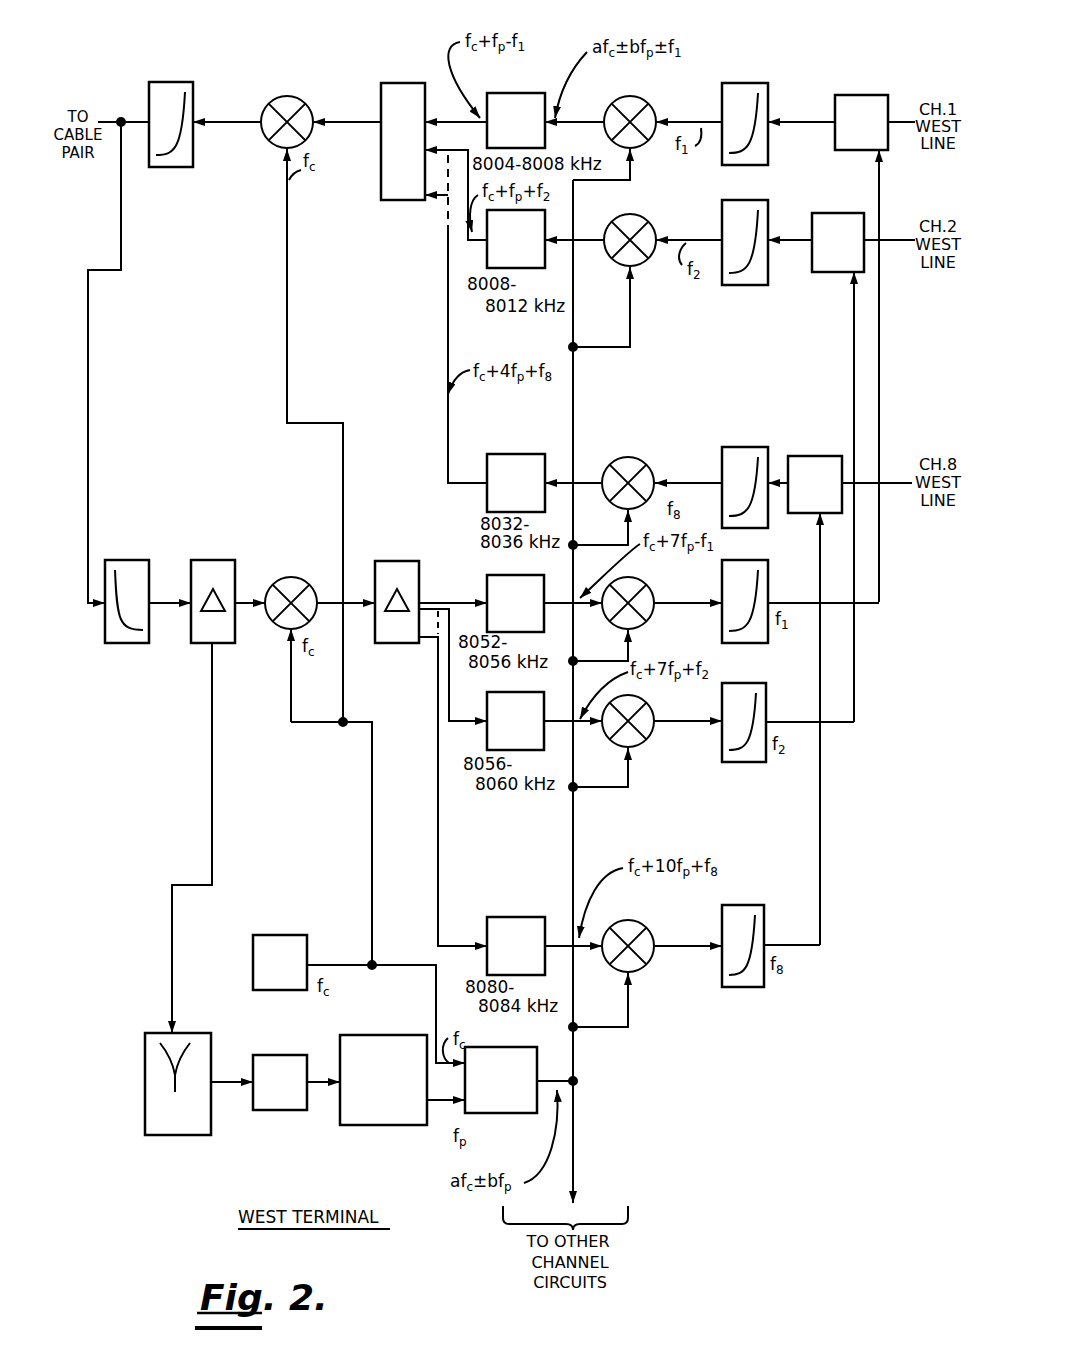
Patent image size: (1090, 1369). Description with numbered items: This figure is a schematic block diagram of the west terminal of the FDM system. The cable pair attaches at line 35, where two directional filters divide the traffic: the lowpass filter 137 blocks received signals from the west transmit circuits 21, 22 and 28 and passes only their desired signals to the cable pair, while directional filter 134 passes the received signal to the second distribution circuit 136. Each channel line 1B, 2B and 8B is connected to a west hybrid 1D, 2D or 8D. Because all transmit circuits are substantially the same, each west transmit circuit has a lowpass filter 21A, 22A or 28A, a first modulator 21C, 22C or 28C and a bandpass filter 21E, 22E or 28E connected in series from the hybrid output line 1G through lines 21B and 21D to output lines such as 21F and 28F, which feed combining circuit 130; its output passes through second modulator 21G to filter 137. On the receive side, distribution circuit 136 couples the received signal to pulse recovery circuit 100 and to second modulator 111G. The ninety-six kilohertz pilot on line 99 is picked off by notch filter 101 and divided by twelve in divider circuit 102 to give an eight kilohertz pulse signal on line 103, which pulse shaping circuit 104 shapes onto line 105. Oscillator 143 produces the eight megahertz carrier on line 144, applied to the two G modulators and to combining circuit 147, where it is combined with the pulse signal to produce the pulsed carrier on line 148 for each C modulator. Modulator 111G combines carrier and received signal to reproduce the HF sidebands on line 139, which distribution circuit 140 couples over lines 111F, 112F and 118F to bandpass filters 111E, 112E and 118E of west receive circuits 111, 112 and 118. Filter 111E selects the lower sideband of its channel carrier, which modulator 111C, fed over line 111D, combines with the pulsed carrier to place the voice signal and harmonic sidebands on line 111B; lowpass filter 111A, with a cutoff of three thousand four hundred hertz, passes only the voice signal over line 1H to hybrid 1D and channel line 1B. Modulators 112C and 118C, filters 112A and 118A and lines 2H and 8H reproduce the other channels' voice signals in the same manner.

The directional lowpass filter 137 is at (158, 88).
The line 35 is at (104, 121).
The second modulator 21G is at (287, 102).
The combining circuit 130 is at (383, 84).
The conductor from filter 21E to combining network 21F is at (463, 122).
The filter U (8004-8008 kHz) 21E is at (502, 92).
The conductor from mixer 21C to filter 21E 21D is at (567, 121).
The mixer (modulator) 21C is at (622, 100).
The conductor from filter 21A to mixer 21C 21B is at (714, 122).
The filter 21A is at (733, 82).
The west voice frequency hybrid 1D is at (850, 95).
The conductor from hybrid 1D to filter 21A 1G is at (822, 127).
The channel line 1B is at (897, 122).
The line 1H is at (881, 178).
The west transmit circuit 21 is at (690, 78).
The west transmit circuit 22 is at (665, 222).
The mixer (modulator) 22C is at (624, 218).
The filter 22A is at (735, 200).
The hybrid HYB channel 2 2D is at (823, 213).
The channel 2 west line 2B is at (880, 240).
The conductor from channel 112 to hybrid 2D 2H is at (856, 690).
The filter U (8008-8012 kHz) 22E is at (488, 268).
The conductor from filter 28E to combining network 28F is at (447, 249).
The west transmit circuit 28 is at (668, 460).
The filter U (8032-8036 kHz) 28E is at (503, 456).
The mixer (modulator) 28C is at (624, 460).
The filter 28A is at (736, 437).
The hybrid HYB channel 8 8D is at (808, 456).
The channel 8 west line 8B is at (886, 483).
The conductor from channel 118 to hybrid 8D 8H is at (822, 848).
The directional filter 134 is at (110, 560).
The second distribution circuit 136 is at (198, 560).
The second modulator 111G is at (283, 578).
The line 139 is at (349, 598).
The distribution circuit 140 is at (392, 561).
The conductor from amplifier 140 to filter 111E 111F is at (434, 603).
The bandpass filter 111E is at (501, 575).
The first modulator circuit 111C is at (632, 577).
The conductor from filter 111E to mixer 111C 111D is at (576, 604).
The line 111B is at (658, 603).
The lowpass filter 111A is at (731, 560).
The west receive circuit 111 is at (860, 612).
The conductor from amplifier 140 to filter 112E 112F is at (449, 700).
The bandpass filter 112E is at (504, 693).
The mixer (demodulator) 112C is at (636, 697).
The filter 112A is at (737, 684).
The west receive circuit 112 is at (826, 735).
The conductor from amplifier 140 to filter 118E 118F is at (438, 700).
The bandpass filter 118E is at (499, 917).
The mixer (demodulator) 118C is at (640, 924).
The filter 118A is at (726, 905).
The west receive circuit 118 is at (826, 913).
The line 99 is at (213, 798).
The pulse signal recovery circuit 100 is at (152, 1020).
The pick-off filter 101 is at (185, 1033).
The divider circuit 102 is at (275, 1055).
The line 103 is at (316, 1088).
The pulse shaping circuit 104 is at (368, 1035).
The line 105 is at (436, 1106).
The oscillator 143 is at (274, 935).
The line 144 is at (362, 964).
The combining circuit 147 is at (499, 1113).
The line 148 is at (546, 1067).